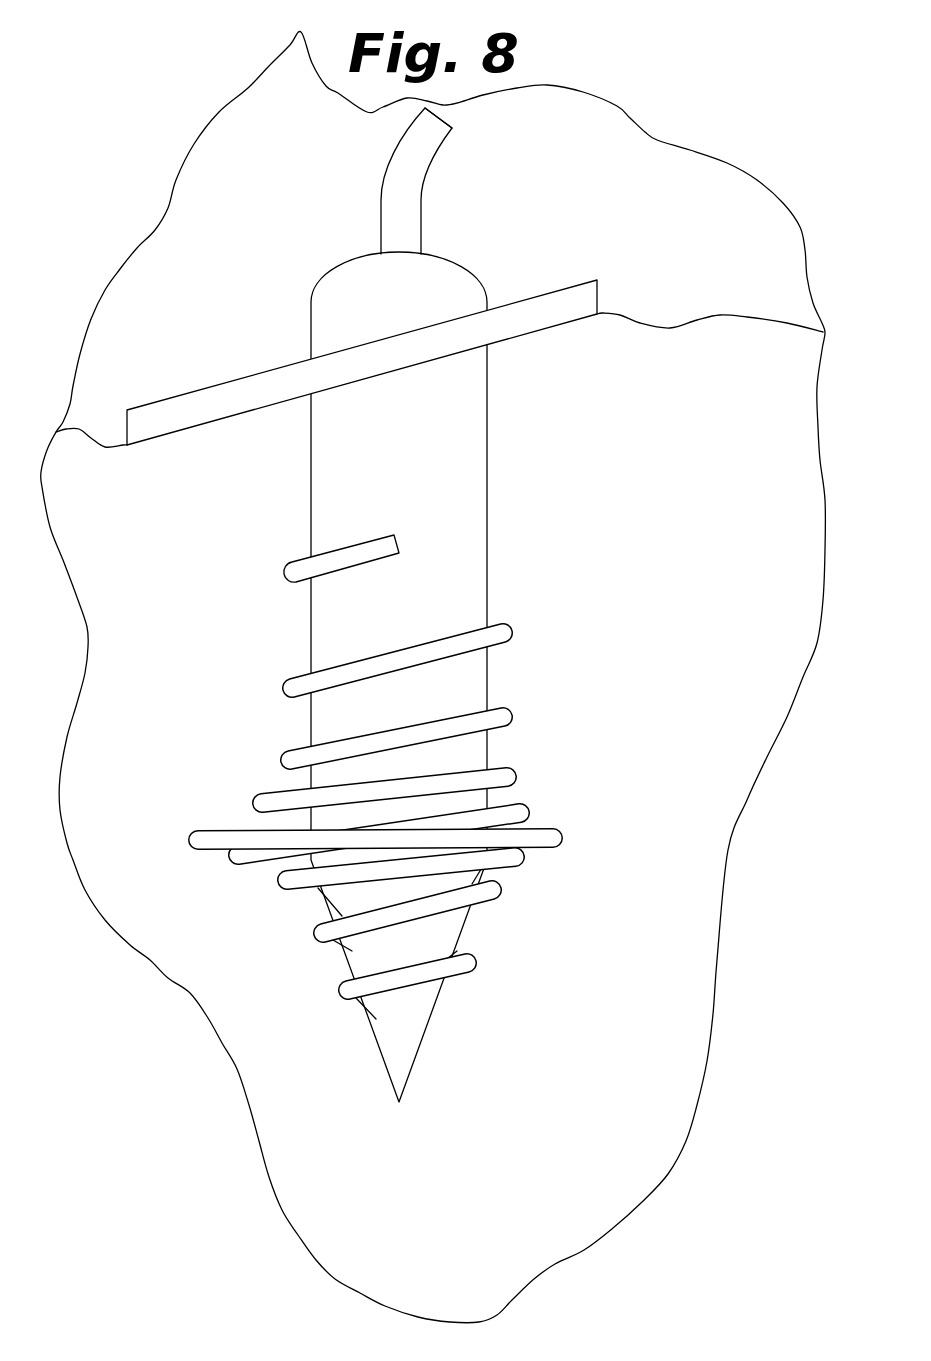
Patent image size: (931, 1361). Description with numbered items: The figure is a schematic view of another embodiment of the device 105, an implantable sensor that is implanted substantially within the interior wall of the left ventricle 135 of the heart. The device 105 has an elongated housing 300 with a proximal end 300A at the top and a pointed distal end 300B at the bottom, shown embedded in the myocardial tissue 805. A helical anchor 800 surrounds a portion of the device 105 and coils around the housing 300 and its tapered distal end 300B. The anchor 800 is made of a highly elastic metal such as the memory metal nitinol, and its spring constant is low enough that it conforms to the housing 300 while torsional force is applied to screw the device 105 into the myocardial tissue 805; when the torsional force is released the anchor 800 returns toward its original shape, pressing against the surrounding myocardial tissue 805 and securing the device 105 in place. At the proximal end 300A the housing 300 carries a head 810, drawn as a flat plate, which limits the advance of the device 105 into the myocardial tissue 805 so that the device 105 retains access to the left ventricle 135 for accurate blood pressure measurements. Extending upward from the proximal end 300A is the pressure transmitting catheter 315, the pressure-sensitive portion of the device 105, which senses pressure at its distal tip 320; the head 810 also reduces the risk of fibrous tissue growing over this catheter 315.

The device 105 is at (588, 574).
The left ventricle 135 is at (697, 214).
The housing 300 is at (487, 465).
The proximal end 300A is at (474, 246).
The distal end 300B is at (416, 1065).
The pressure transmitting catheter 315 is at (380, 208).
The distal tip 320 is at (452, 128).
The helical anchor 800 is at (553, 838).
The myocardial tissue 805 is at (697, 390).
The head 810 is at (268, 386).